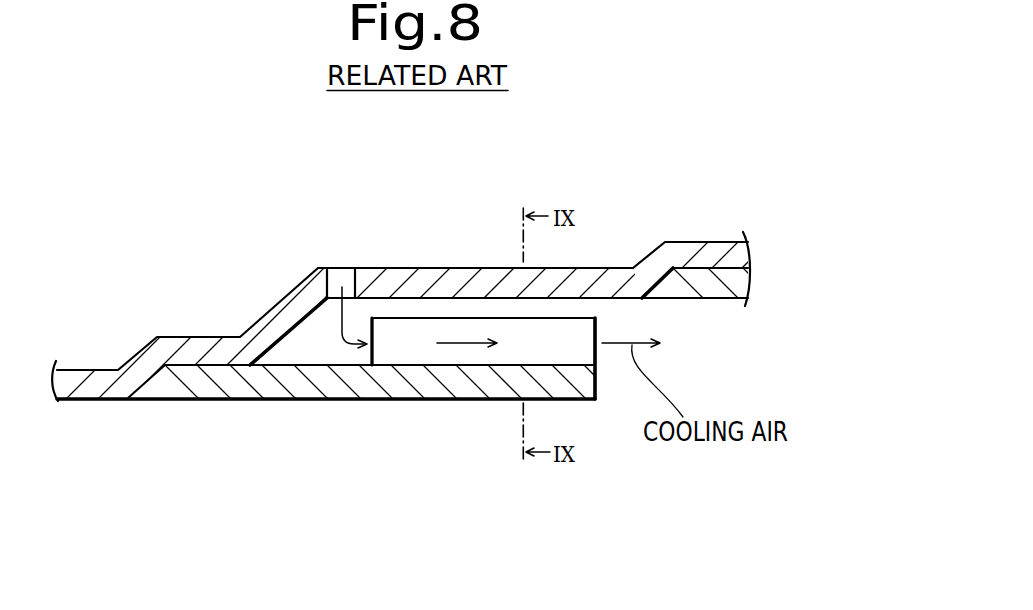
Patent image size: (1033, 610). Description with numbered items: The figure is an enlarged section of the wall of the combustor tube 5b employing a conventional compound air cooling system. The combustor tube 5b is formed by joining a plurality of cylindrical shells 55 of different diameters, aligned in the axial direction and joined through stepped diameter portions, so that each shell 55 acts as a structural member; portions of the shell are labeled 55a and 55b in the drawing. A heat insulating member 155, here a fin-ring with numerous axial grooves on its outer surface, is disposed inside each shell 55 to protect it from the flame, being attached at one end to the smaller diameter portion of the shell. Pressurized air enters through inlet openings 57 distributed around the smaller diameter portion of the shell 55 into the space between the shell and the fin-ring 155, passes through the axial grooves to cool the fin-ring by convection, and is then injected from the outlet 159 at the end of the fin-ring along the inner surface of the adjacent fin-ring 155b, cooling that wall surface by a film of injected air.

The combustor tube 5b is at (598, 243).
The cylindrical shell 55 is at (505, 305).
The plate portion 55a is at (395, 277).
The plate portion 55b is at (685, 248).
The inlet opening 57 is at (356, 257).
The heat insulating member 155 is at (332, 385).
The adjacent fin-ring 155b is at (708, 287).
The outlet 159 is at (597, 353).